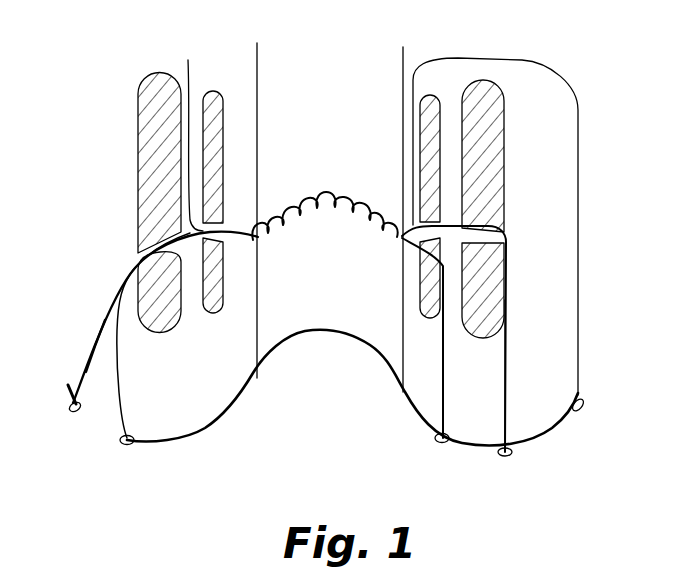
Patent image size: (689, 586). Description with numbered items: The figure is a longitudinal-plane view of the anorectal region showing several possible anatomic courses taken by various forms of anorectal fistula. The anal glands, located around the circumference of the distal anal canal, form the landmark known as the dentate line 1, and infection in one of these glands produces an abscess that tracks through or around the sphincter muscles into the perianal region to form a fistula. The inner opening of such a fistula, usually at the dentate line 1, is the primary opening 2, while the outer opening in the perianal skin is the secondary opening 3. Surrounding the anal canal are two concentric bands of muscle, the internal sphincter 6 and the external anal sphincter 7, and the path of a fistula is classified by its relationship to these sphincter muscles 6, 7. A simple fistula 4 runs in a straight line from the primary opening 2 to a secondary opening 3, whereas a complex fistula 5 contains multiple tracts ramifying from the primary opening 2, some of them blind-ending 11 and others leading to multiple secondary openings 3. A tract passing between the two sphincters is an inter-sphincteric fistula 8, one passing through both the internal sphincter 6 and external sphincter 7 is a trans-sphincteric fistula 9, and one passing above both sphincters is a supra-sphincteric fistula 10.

The dentate line 1 is at (150, 72).
The primary opening 2 is at (262, 243).
The secondary opening 3 is at (120, 441).
The simple fistula 4 is at (440, 376).
The complex fistula 5 is at (116, 350).
The internal anal sphincter 6 is at (218, 92).
The external anal sphincter 7 is at (473, 81).
The inter-sphincteric fistula 8 is at (444, 396).
The trans-sphincteric fistula 9 is at (507, 396).
The supra-sphincteric fistula 10 is at (579, 353).
The blind-ending tract 11 is at (188, 60).